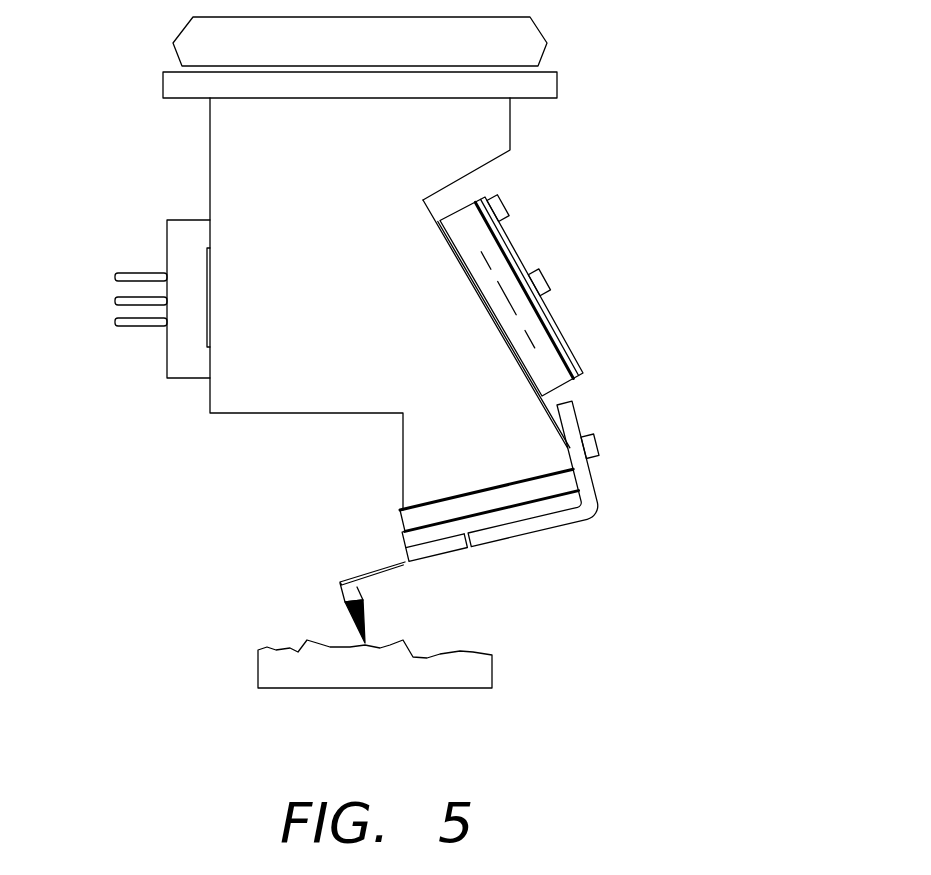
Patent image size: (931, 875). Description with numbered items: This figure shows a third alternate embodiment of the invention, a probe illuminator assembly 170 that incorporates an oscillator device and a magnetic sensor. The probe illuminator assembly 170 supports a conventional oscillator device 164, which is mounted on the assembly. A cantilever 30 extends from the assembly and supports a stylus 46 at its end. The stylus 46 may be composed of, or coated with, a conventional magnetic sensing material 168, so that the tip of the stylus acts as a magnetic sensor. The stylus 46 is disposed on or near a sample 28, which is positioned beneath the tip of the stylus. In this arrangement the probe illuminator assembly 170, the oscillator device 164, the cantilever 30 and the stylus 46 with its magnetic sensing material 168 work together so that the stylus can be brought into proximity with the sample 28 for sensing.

The probe illuminator assembly 170 is at (505, 172).
The oscillator device 164 is at (400, 519).
The cantilever 30 is at (360, 576).
The stylus 46 is at (360, 588).
The magnetic sensing material 168 is at (355, 627).
The sample 28 is at (495, 662).